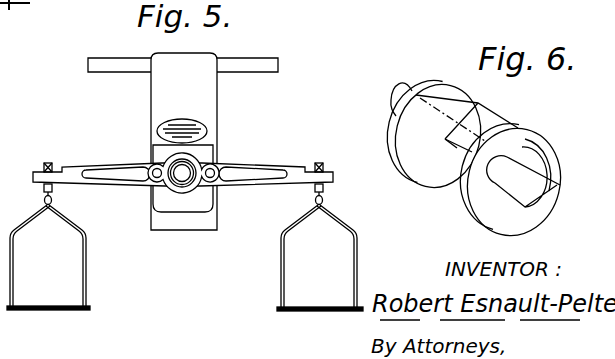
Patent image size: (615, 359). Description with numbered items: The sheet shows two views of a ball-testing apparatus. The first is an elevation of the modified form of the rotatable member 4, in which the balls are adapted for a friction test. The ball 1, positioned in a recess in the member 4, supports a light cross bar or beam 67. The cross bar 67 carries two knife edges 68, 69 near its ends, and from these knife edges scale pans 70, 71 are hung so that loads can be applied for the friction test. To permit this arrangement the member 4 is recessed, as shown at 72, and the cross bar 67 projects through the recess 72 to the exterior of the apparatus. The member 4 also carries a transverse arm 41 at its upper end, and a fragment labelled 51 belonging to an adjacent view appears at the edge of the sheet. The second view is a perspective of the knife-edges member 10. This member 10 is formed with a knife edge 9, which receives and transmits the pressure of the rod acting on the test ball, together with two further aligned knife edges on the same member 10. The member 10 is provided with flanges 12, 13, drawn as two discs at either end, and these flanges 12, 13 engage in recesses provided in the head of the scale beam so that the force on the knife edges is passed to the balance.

In FIG. 5, the adjacent figure part (cut off) 51 is at (12, 21).
In FIG. 5, the rotatable member 4 is at (184, 141).
In FIG. 5, the cross arms 41 is at (134, 68).
In FIG. 5, the recess 72 is at (206, 152).
In FIG. 5, the cross bar 67 is at (137, 166).
In FIG. 5, the ball 1 is at (166, 180).
In FIG. 5, the knife edge 68 is at (49, 158).
In FIG. 5, the knife edge 69 is at (320, 158).
In FIG. 5, the scale pan 70 is at (48, 270).
In FIG. 5, the scale pan 71 is at (331, 314).
In FIG. 6, the knife edge 9 is at (455, 148).
In FIG. 6, the knife-edges member 10 is at (500, 124).
In FIG. 6, the flange 12 is at (434, 86).
In FIG. 6, the flange 13 is at (463, 214).